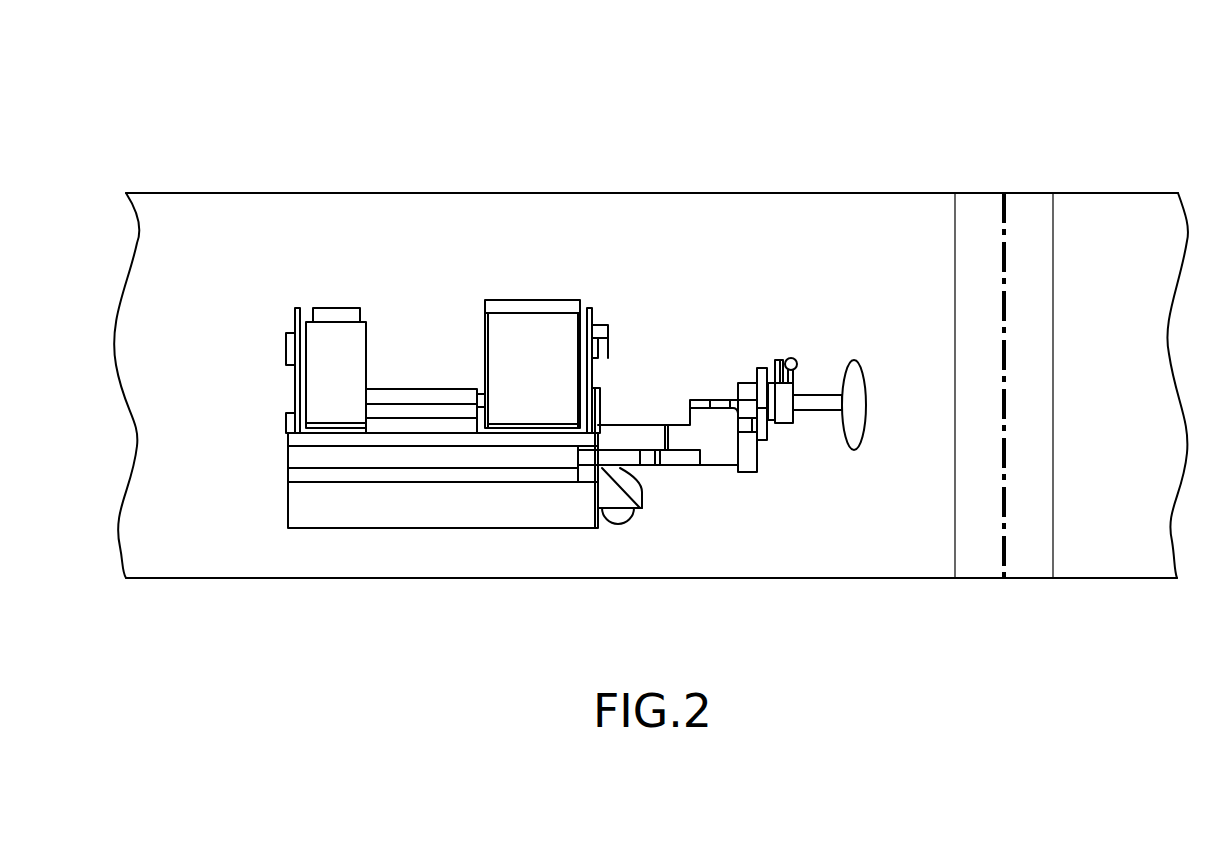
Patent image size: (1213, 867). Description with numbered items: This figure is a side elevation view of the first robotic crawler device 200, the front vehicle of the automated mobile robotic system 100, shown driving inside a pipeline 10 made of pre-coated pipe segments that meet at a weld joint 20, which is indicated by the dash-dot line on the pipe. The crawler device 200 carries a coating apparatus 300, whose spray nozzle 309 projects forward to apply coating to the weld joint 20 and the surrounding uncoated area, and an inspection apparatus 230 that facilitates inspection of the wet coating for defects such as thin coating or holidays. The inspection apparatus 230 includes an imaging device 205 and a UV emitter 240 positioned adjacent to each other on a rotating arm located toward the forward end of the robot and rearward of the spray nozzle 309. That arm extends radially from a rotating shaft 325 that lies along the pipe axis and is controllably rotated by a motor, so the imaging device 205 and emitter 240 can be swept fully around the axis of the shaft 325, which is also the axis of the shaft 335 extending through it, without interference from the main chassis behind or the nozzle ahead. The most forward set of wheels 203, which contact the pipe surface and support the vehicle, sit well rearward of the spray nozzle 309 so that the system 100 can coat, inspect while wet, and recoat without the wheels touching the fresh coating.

The pipeline 10 is at (208, 193).
The automated mobile robotic system 100 is at (1098, 121).
The weld joint 20 is at (1005, 556).
The coating apparatus 300 is at (865, 215).
The first robotic crawler device 200 is at (401, 554).
The wheels 203 is at (617, 526).
The inspection apparatus 230 is at (795, 459).
The rotating shaft 325 is at (790, 424).
The imaging device 205 is at (778, 360).
The UV emitter 240 is at (795, 357).
The shaft 335 is at (823, 410).
The spray nozzle 309 is at (867, 385).